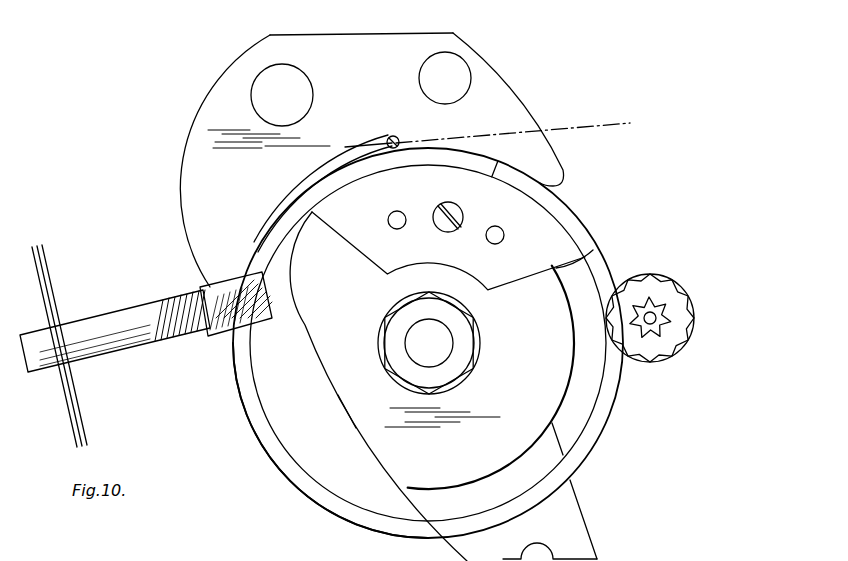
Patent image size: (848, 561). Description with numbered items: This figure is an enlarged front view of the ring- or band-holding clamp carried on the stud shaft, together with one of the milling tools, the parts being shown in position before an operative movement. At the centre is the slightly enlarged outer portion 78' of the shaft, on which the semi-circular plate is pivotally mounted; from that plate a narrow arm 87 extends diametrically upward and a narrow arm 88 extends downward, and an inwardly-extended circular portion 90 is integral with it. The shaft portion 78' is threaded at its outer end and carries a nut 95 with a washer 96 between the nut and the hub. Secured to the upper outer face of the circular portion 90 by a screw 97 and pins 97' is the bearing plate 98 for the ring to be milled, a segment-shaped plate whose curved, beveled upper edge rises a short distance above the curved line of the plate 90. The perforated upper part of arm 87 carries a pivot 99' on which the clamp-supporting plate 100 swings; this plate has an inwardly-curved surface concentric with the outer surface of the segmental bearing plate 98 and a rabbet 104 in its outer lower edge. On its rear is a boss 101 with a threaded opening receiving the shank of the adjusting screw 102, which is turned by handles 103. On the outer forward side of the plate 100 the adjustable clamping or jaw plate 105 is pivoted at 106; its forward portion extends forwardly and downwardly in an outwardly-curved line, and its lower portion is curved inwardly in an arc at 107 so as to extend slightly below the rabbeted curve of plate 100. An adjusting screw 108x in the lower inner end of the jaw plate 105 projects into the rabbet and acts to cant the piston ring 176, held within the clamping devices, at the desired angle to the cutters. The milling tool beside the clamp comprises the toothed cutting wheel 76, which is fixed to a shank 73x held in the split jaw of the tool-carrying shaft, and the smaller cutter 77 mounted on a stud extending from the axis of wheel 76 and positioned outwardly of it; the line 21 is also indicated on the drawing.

The axis line 21 is at (476, 135).
The shank 73x is at (652, 316).
The cutting wheel 76 is at (682, 305).
The cutter 77 is at (661, 330).
The outer portion of the shaft 78' is at (464, 343).
The narrow plate or arm 87 is at (297, 257).
The narrow plate or arm 88 is at (575, 520).
The circular portion 90 is at (297, 285).
The nut 95 is at (407, 370).
The washer 96 is at (380, 347).
The screw 97 is at (521, 202).
The pins 97' is at (513, 220).
The bearing plate 98 is at (557, 252).
The pivot 99' is at (231, 95).
The clamp-supporting plate 100 is at (203, 203).
The boss 101 is at (215, 333).
The adjusting screw 102 is at (128, 350).
The handles 103 is at (80, 420).
The rabbet 104 is at (265, 232).
The adjustable clamping or jaw plate 105 is at (517, 100).
The pivot 106 is at (457, 78).
The inwardly curved lower portion 107 is at (507, 163).
The adjusting screw 108x is at (390, 138).
The ring 176 is at (303, 478).